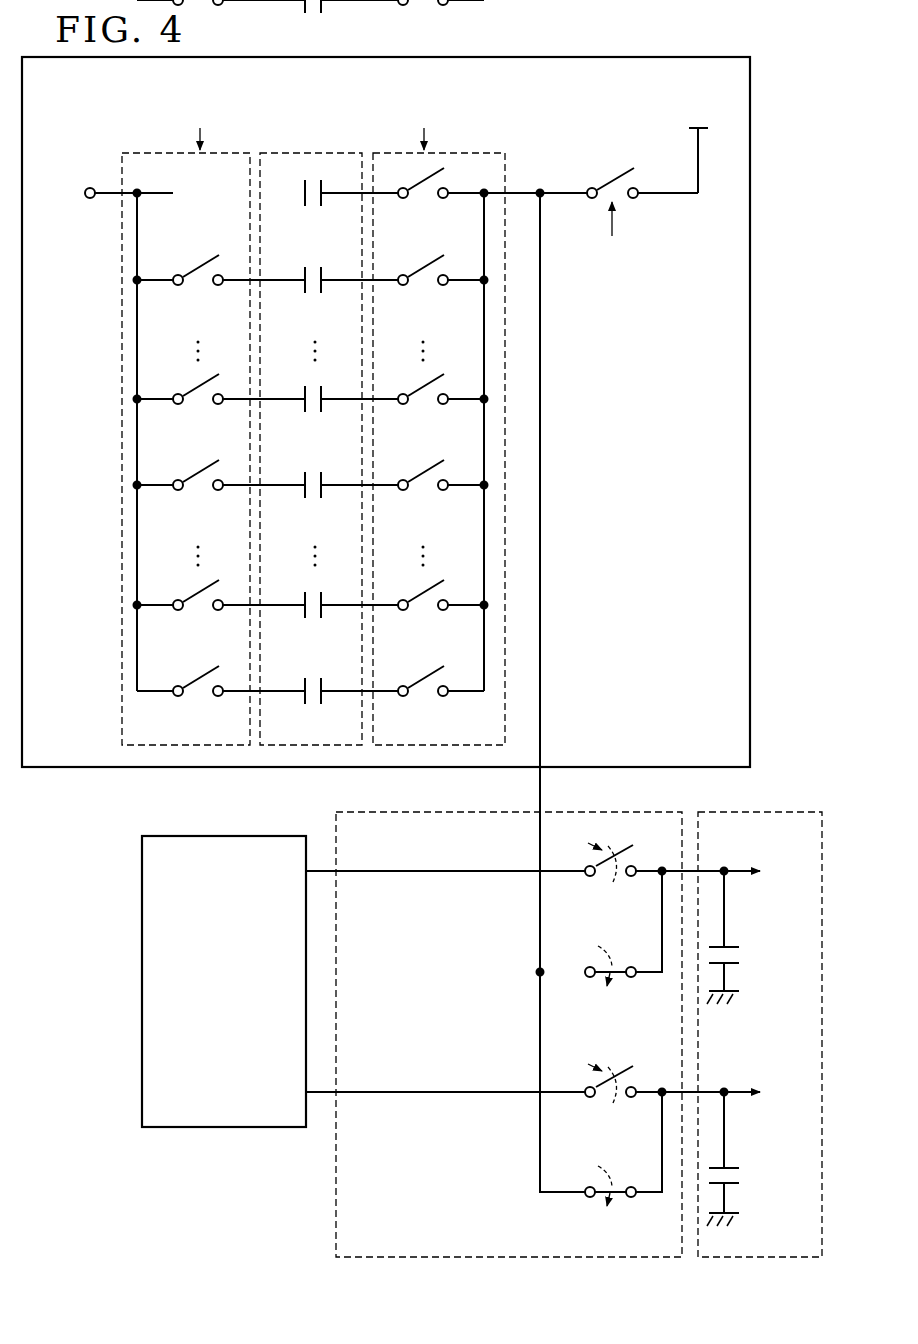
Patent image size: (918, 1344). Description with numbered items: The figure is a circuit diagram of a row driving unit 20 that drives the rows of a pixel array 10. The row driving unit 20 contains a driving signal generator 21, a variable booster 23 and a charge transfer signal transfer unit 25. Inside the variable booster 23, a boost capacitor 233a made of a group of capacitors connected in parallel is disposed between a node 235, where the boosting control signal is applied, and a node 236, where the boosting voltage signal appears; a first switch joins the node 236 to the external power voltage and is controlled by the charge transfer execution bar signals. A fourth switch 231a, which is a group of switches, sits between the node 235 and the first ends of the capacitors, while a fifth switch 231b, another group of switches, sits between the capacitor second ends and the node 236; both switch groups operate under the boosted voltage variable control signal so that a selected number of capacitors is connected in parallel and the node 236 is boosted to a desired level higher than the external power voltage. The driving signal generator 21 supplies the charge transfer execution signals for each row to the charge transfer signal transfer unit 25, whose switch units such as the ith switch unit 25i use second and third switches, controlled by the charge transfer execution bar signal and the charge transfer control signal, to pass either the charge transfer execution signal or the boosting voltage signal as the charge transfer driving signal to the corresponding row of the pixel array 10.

The row driving unit 20 is at (670, 40).
The variable booster 23 is at (400, 57).
The fourth switch 231a is at (152, 153).
The boost capacitor 233a is at (300, 153).
The fifth switch 231b is at (480, 153).
The node 235 is at (90, 188).
The node 236 is at (541, 196).
The driving signal generator 21 is at (227, 835).
The charge transfer signal transfer unit 25 is at (573, 812).
The ith switch unit 25i is at (560, 1010).
The pixel array 10 is at (765, 812).